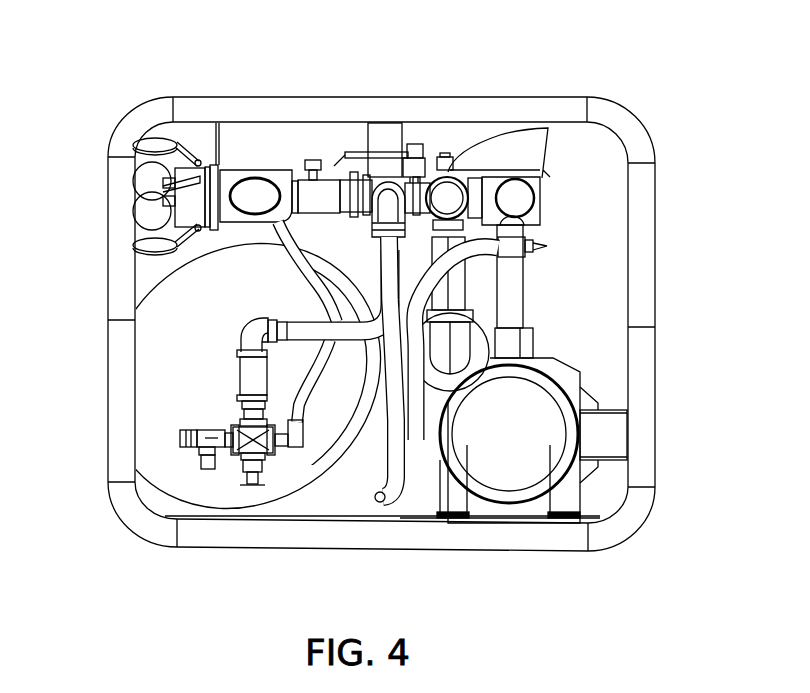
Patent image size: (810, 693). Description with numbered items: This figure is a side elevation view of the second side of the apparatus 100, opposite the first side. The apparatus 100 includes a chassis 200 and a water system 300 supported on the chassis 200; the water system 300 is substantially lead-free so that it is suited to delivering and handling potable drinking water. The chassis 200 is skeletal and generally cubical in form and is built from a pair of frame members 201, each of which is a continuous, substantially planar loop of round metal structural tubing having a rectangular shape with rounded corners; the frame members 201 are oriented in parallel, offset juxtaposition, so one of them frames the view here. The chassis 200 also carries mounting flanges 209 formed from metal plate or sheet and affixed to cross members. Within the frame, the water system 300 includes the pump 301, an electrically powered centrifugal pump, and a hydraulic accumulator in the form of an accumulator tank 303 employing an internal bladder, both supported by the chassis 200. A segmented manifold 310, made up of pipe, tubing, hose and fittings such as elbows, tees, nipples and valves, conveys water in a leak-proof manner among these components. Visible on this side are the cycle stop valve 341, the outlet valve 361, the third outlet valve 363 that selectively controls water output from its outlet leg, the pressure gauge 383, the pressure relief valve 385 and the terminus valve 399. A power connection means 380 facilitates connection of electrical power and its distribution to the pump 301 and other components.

The apparatus 100 is at (677, 100).
The chassis 200 is at (398, 324).
The frame member 201 is at (645, 290).
The mounting flange 209 is at (216, 178).
The water system 300 is at (517, 447).
The pump 301 is at (530, 478).
The accumulator tank 303 is at (168, 357).
The manifold 310 is at (513, 282).
The cycle stop valve 341 is at (487, 322).
The first outlet valve 361 is at (313, 160).
The third outlet valve 363 is at (153, 158).
The power connection means 380 is at (612, 435).
The pressure gauge 383 is at (253, 192).
The pressure relief valve 385 is at (203, 458).
The terminus valve 399 is at (260, 477).